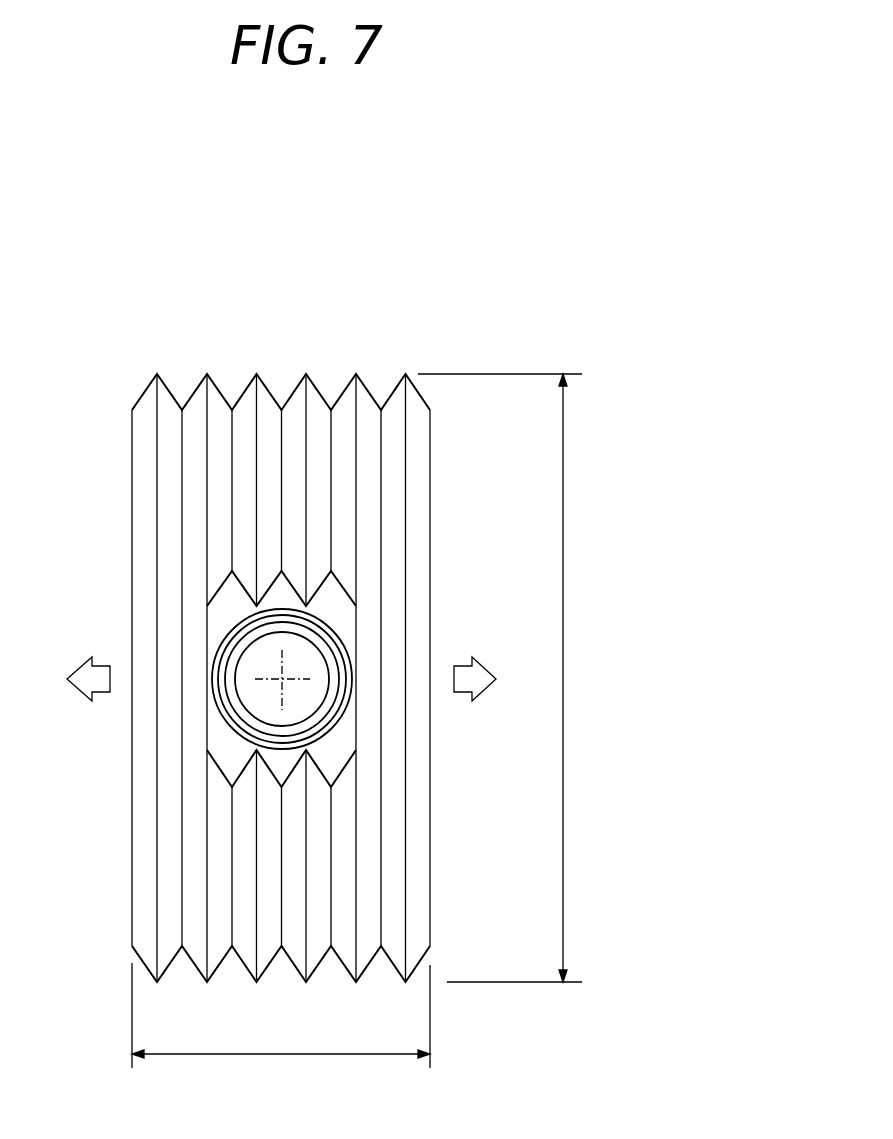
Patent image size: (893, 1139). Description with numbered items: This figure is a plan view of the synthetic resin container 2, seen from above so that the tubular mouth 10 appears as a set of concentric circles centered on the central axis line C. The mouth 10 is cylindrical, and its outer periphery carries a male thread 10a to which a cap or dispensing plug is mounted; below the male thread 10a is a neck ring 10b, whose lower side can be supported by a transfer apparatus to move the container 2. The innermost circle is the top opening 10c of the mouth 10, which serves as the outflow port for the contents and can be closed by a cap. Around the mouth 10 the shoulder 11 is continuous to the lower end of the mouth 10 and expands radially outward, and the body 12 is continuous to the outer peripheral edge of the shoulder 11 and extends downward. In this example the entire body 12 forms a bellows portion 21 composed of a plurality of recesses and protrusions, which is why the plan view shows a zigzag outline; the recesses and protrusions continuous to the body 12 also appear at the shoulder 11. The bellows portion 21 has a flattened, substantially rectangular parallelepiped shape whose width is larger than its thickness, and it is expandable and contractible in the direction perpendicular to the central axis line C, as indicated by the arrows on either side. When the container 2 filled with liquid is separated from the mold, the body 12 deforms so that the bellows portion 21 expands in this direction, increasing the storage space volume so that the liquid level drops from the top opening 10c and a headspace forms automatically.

The synthetic resin container 2 is at (527, 255).
The mouth 10 is at (223, 645).
The male thread 10a is at (340, 653).
The neck ring 10b is at (348, 708).
The top opening 10c is at (257, 697).
The shoulder 11 is at (383, 527).
The body 12 is at (132, 467).
The bellows portion 21 is at (132, 865).
The central axis line C is at (287, 675).